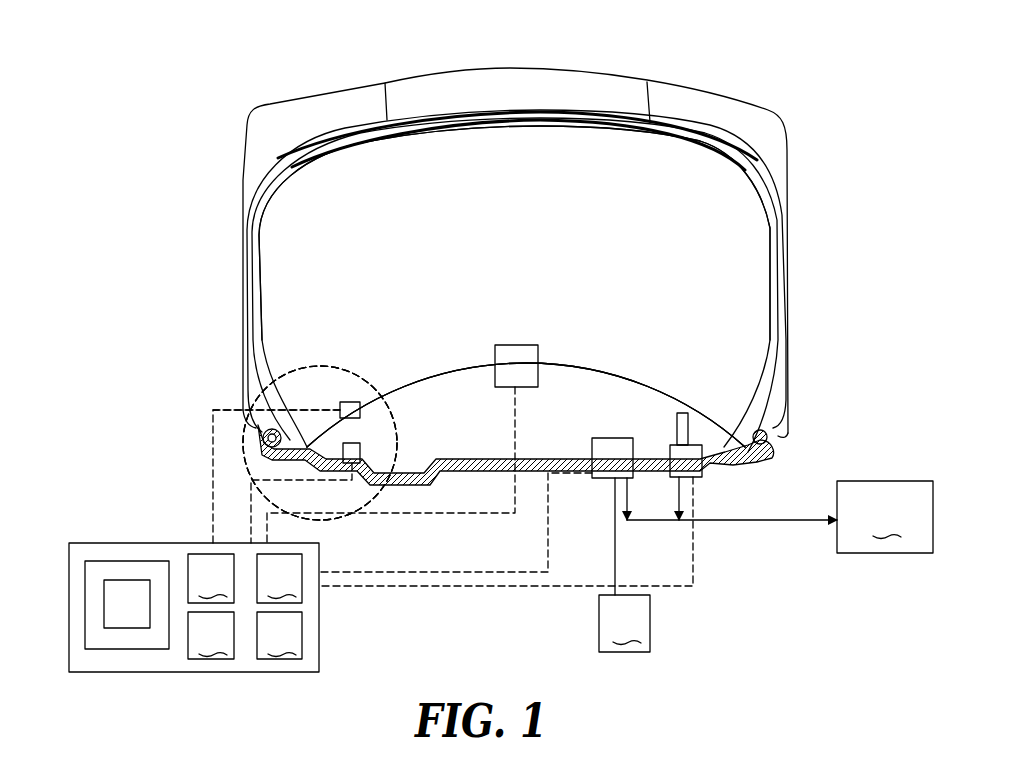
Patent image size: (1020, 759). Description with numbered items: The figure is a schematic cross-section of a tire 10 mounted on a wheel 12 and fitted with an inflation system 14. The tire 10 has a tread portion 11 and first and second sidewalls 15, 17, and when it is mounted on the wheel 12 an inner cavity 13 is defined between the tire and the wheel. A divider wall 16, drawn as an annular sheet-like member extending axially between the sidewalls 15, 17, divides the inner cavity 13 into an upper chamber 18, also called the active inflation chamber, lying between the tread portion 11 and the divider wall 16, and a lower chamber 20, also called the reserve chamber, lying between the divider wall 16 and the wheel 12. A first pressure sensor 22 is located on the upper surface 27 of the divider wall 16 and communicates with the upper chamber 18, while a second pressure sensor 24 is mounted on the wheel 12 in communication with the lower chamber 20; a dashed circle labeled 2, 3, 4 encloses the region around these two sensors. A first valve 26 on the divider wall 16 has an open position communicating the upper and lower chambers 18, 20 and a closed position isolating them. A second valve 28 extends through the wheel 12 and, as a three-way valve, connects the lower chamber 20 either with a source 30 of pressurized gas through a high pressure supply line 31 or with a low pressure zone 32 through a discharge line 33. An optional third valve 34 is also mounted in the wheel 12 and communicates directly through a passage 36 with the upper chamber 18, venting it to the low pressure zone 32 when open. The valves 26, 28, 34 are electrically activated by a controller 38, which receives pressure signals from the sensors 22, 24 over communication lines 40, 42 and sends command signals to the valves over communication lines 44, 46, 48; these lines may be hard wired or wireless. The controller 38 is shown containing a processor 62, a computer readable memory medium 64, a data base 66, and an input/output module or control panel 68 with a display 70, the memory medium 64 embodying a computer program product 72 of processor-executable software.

The sensor assembly 2 is at (315, 365).
The sensor assembly 3 is at (320, 443).
The sensor assembly 4 is at (320, 443).
The tire 10 is at (771, 115).
The tread portion 11 is at (611, 80).
The wheel 12 is at (773, 450).
The inner cavity 13 is at (458, 269).
The inflation system 14 is at (188, 384).
The first sidewall 15 is at (789, 268).
The divider wall 16 is at (568, 365).
The second sidewall 17 is at (243, 288).
The upper chamber 18 is at (514, 233).
The lower chamber 20 is at (526, 405).
The first pressure sensor 22 is at (350, 402).
The second pressure sensor 24 is at (362, 445).
The first valve 26 is at (518, 345).
The upper surface 27 is at (526, 405).
The second valve 28 is at (592, 445).
The source of pressurized gas 30 is at (624, 623).
The high pressure supply line 31 is at (615, 553).
The low pressure zone 32 is at (885, 517).
The discharge line 33 is at (743, 520).
The third valve 34 is at (670, 450).
The passage 36 is at (686, 428).
The controller 38 is at (95, 672).
The communication line 40 is at (213, 470).
The communication line 42 is at (251, 518).
The communication line 44 is at (367, 505).
The communication line 46 is at (443, 574).
The communication line 48 is at (492, 588).
The processor 62 is at (211, 578).
The computer readable memory medium 64 is at (279, 578).
The data base 66 is at (211, 635).
The input/output module or control panel 68 is at (85, 580).
The display 70 is at (104, 602).
The computer program product 72 is at (279, 635).